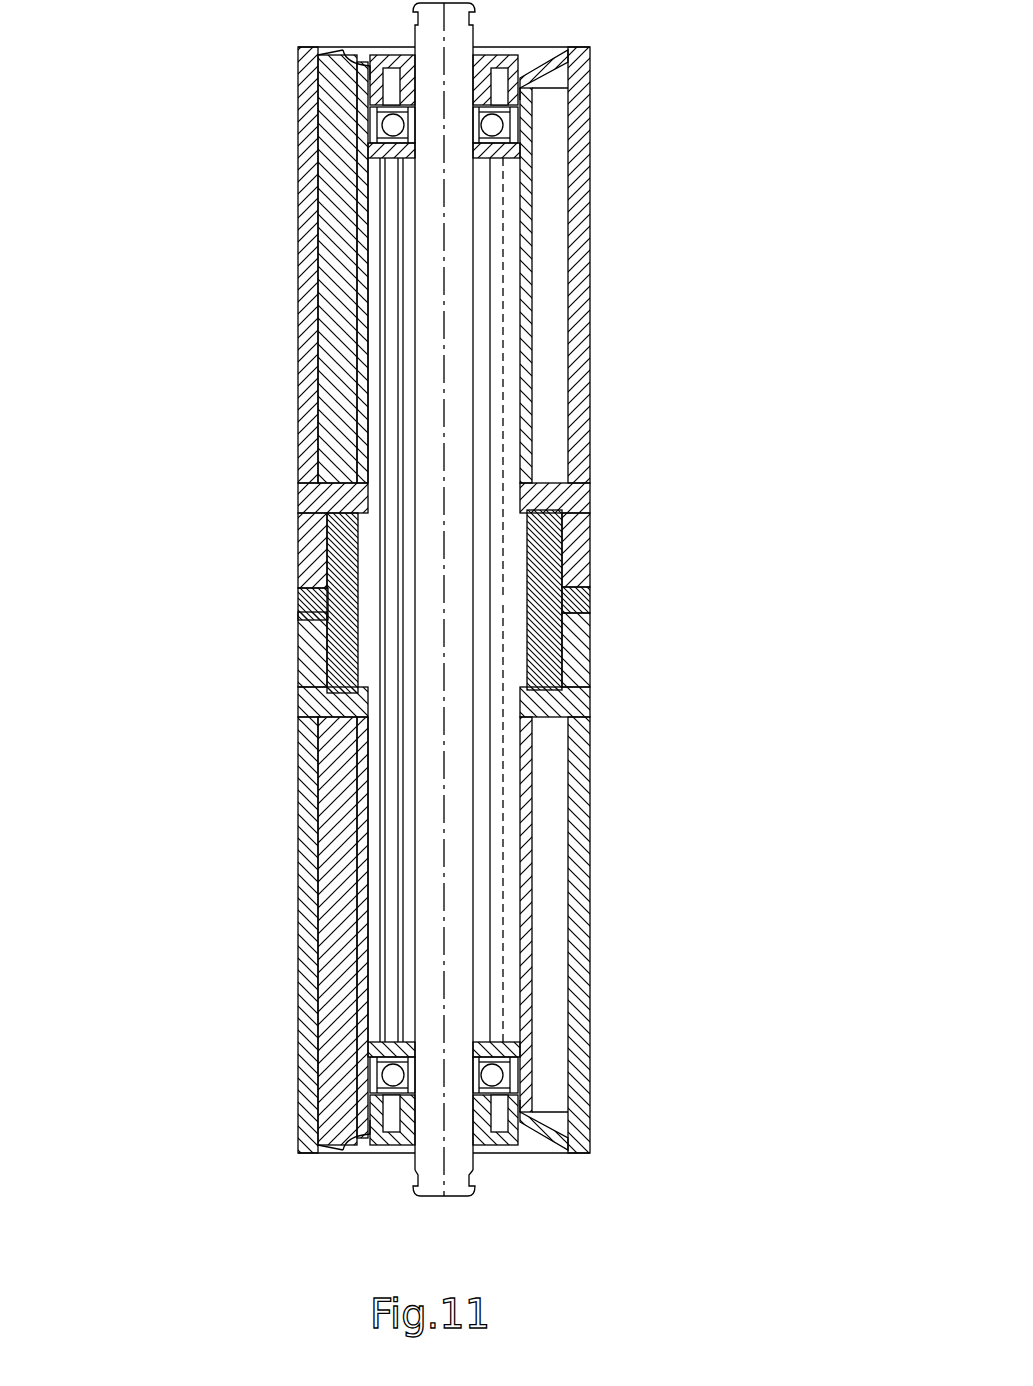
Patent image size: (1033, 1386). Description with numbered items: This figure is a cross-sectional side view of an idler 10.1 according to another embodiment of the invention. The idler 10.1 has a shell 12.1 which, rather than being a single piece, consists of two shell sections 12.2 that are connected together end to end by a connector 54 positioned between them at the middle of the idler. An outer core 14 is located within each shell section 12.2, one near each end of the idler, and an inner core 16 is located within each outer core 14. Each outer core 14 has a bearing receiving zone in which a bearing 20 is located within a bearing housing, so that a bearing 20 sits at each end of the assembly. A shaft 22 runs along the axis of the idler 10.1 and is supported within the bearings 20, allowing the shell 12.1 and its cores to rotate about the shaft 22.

The idler 10.1 is at (641, 569).
The shell 12.1 is at (296, 913).
The shell section 12.2 is at (297, 345).
The outer core 14 is at (330, 233).
The inner core 16 is at (512, 320).
The bearing 20 is at (505, 118).
The shaft 22 is at (460, 848).
The connector 54 is at (343, 595).